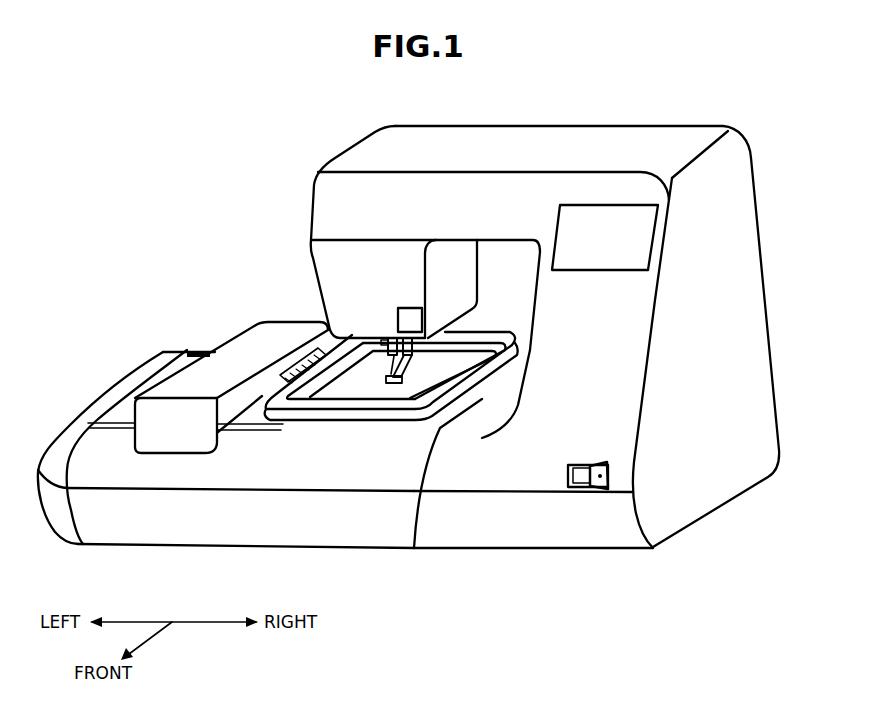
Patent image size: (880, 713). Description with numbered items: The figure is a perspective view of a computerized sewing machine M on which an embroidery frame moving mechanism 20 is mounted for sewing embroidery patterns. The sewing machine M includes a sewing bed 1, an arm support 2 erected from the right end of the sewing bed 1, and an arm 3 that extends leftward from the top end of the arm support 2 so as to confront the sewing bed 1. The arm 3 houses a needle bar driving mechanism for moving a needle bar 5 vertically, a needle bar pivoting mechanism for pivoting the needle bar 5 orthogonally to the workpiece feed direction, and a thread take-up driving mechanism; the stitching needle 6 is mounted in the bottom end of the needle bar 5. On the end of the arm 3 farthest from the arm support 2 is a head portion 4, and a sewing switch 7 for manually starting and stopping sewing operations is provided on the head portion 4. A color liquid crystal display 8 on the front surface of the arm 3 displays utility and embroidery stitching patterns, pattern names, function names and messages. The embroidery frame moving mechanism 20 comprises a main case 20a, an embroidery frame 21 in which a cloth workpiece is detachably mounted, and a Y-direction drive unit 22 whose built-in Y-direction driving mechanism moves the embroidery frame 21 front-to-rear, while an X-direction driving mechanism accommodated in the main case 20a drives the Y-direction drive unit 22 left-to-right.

The computerized sewing machine M is at (223, 166).
The sewing bed 1 is at (503, 401).
The arm support 2 is at (751, 297).
The arm 3 is at (553, 137).
The head portion 4 is at (310, 257).
The needle bar 5 is at (389, 371).
The stitching needle 6 is at (387, 378).
The sewing switch 7 is at (410, 310).
The color liquid crystal display 8 is at (598, 262).
The embroidery frame moving mechanism 20 is at (144, 340).
The main case 20a is at (307, 523).
The embroidery frame 21 is at (388, 425).
The Y-direction drive unit 22 is at (243, 340).